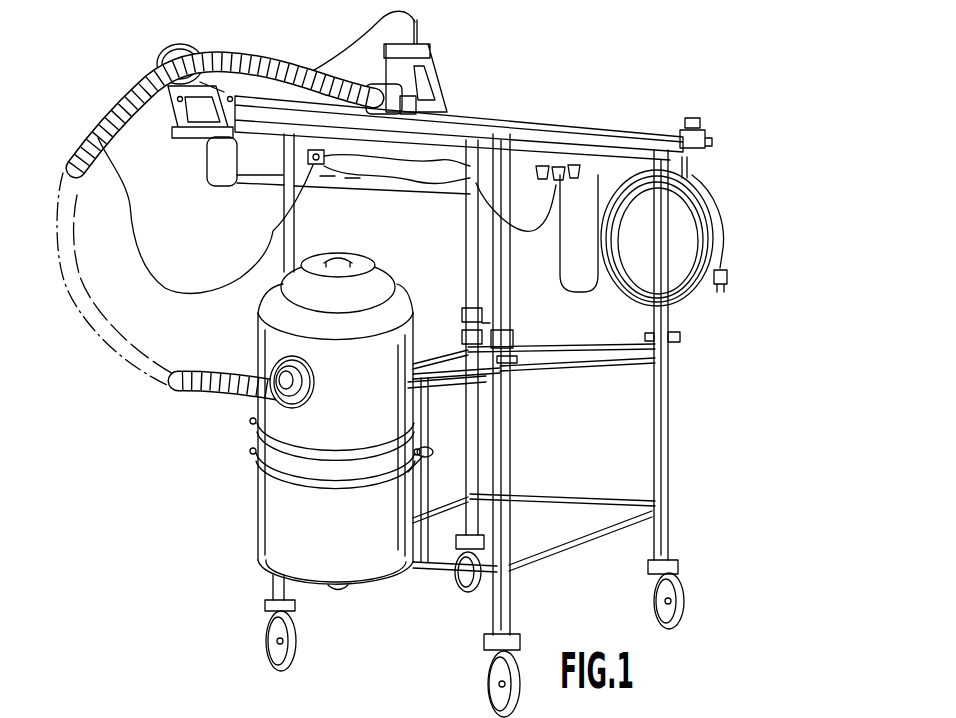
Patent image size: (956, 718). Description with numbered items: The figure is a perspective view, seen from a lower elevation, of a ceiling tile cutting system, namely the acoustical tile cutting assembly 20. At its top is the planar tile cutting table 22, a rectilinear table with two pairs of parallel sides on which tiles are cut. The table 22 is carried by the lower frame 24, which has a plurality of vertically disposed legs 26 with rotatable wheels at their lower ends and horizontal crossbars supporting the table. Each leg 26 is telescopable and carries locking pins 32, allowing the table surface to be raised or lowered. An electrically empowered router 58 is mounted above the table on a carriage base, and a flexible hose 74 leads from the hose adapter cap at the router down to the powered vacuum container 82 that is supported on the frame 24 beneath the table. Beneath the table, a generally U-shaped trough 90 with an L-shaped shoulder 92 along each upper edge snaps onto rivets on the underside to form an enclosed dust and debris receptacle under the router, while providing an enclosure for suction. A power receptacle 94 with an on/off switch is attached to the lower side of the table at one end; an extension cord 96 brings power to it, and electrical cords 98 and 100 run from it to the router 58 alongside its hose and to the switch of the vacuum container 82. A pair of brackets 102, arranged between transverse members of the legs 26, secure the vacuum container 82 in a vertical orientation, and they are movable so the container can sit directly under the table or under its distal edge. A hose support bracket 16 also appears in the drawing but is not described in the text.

The acoustical tile cutting assembly 20 is at (612, 27).
The tile cutting table 22 is at (581, 123).
The lower frame 24 is at (494, 425).
The legs 26 is at (297, 232).
The locking pins 32 is at (462, 325).
The hose support bracket 16 is at (195, 136).
The router 58 is at (438, 80).
The flexible hose 74 is at (143, 80).
The powered vacuum container 82 is at (314, 421).
The trough 90 is at (260, 187).
The L-shaped shoulder 92 is at (216, 166).
The power receptacle 94 is at (577, 165).
The extension cord 96 is at (720, 248).
The electrical cord 98 is at (230, 270).
The electrical cord 100 is at (270, 268).
The brackets 102 is at (432, 434).